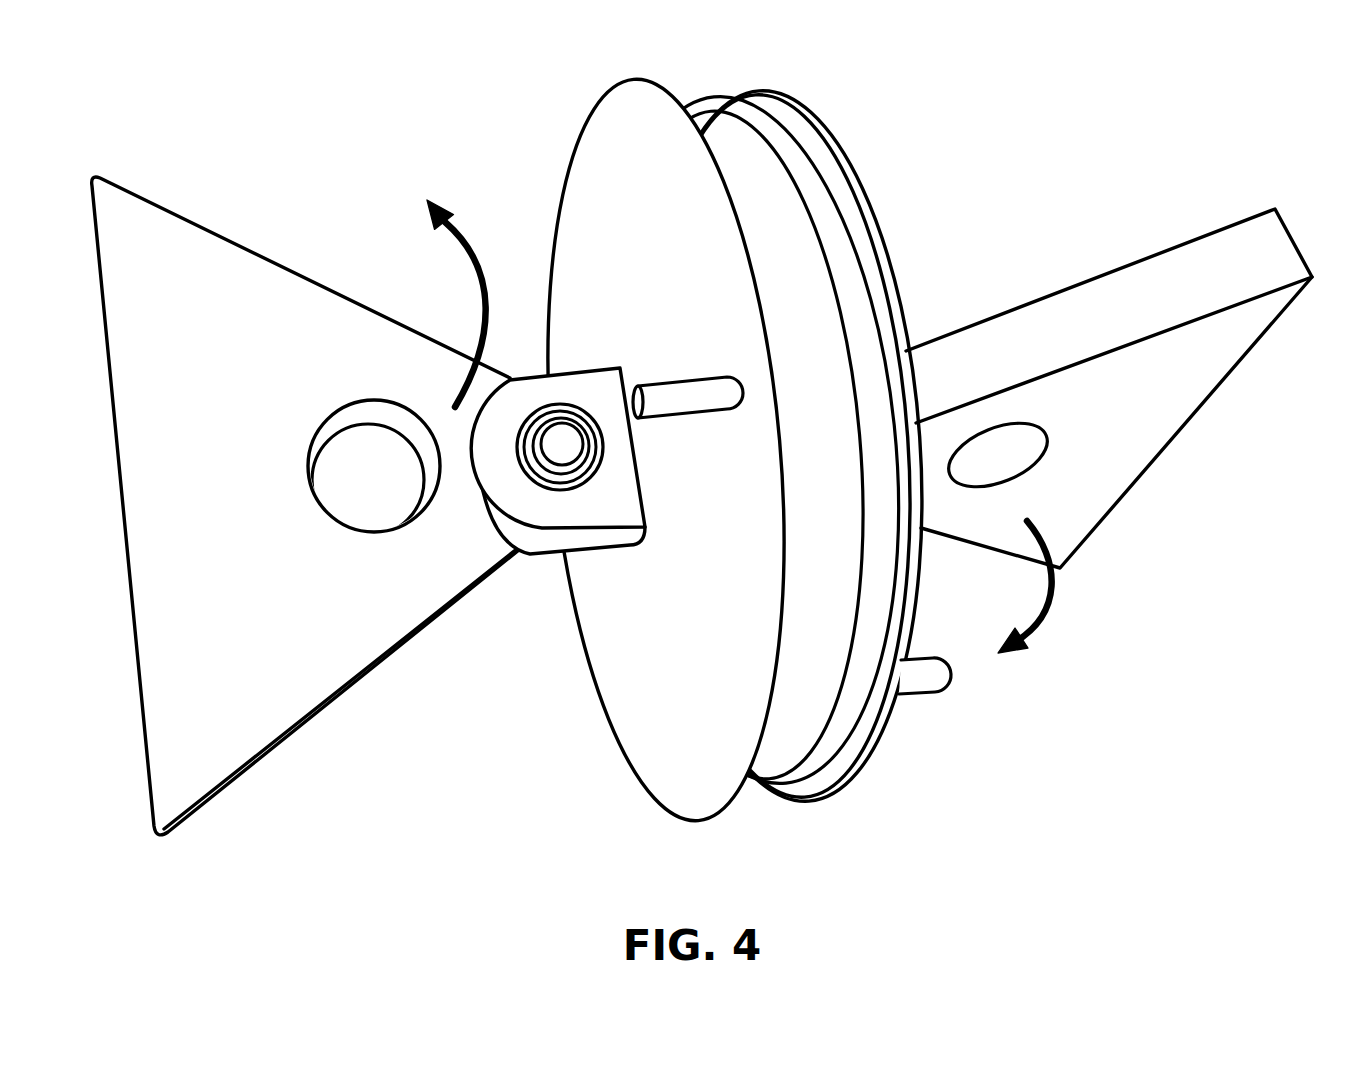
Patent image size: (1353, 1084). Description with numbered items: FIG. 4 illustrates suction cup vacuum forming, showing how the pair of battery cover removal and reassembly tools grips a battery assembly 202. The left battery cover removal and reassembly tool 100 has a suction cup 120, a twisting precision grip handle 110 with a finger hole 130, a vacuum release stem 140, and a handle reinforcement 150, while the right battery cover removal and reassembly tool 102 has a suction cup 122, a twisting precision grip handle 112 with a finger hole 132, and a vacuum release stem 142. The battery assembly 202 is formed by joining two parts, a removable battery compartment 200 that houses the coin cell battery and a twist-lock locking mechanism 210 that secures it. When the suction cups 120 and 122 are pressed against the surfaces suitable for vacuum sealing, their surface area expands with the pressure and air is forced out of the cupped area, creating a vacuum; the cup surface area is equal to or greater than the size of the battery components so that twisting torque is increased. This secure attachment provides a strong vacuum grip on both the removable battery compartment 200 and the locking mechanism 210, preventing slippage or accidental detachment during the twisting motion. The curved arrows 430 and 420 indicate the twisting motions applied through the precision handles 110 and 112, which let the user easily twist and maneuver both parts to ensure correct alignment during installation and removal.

The left battery cover removal and reassembly tool 100 is at (300, 160).
The right battery cover removal and reassembly tool 102 is at (1109, 331).
The twisting precision grip handle 110 is at (245, 272).
The twisting precision grip handle 112 is at (1229, 254).
The suction cup 120 is at (595, 140).
The suction cup 122 is at (850, 168).
The finger hole 130 is at (363, 465).
The finger hole 132 is at (1010, 447).
The vacuum release stem 140 is at (672, 401).
The vacuum release stem 142 is at (927, 680).
The handle reinforcement 150 is at (540, 407).
The removable battery compartment 200 is at (735, 170).
The battery assembly 202 is at (765, 822).
The twist-lock locking mechanism 210 is at (787, 145).
The second plate rotation direction 420 is at (1066, 578).
The first plate rotation direction 430 is at (467, 268).